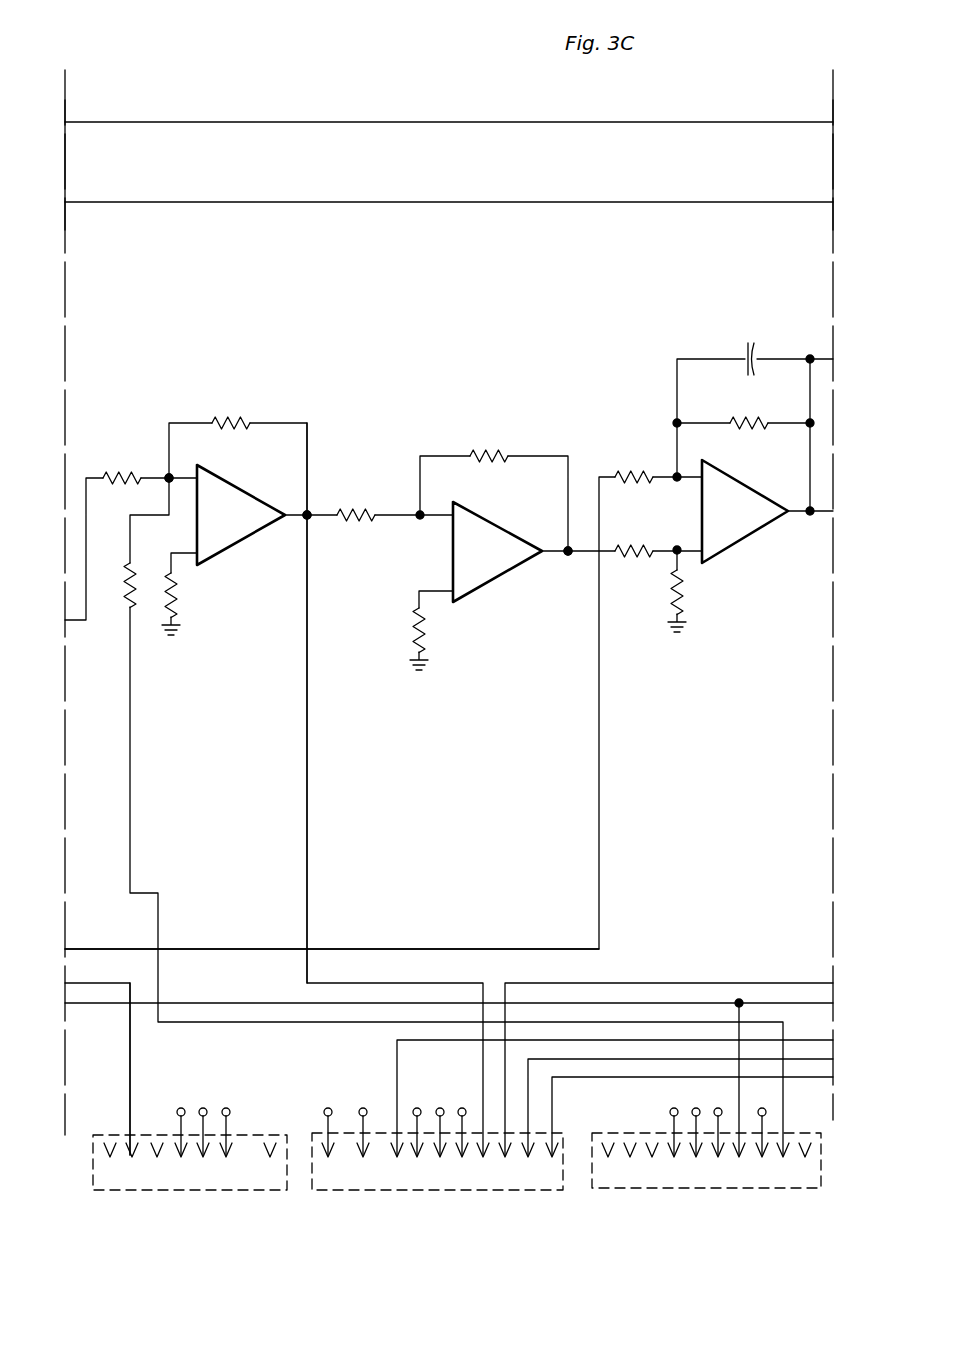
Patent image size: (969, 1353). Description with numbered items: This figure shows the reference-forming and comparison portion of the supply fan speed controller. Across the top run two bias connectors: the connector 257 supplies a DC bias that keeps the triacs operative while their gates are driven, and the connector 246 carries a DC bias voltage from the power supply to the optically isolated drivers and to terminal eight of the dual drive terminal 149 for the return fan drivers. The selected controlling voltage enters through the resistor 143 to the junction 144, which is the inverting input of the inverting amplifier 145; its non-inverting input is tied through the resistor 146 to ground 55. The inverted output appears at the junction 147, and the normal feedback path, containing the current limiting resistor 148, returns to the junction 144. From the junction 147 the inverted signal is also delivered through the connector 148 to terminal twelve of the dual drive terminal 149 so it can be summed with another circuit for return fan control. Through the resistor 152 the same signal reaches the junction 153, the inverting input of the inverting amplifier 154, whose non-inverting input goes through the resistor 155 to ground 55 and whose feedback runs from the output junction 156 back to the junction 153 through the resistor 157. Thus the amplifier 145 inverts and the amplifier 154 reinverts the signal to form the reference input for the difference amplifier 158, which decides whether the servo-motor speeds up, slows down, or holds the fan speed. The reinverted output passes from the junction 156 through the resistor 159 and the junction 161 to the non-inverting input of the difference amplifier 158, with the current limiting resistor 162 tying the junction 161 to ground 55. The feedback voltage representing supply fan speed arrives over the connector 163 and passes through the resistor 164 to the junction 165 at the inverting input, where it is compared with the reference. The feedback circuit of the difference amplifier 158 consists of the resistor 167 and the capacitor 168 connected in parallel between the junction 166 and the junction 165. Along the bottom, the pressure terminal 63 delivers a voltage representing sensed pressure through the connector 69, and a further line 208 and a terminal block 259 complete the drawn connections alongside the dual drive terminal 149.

The connector 257 is at (400, 122).
The connector 246 is at (355, 206).
The resistor 143 is at (143, 467).
The junction 144 is at (172, 474).
The inverting amplifier 145 is at (246, 527).
The resistor 146 is at (174, 594).
The junction 147 is at (310, 514).
The current limiting resistor 148 is at (228, 418).
The resistor 152 is at (374, 519).
The junction 153 is at (420, 516).
The inverting amplifier 154 is at (505, 562).
The resistor 155 is at (416, 630).
The junction 156 is at (568, 554).
The resistor 157 is at (484, 454).
The difference amplifier 158 is at (754, 524).
The resistor 159 is at (640, 548).
The junction 161 is at (690, 530).
The current limiting resistor 162 is at (677, 601).
The connector 163 is at (248, 948).
The resistor 164 is at (638, 474).
The junction 165 is at (677, 477).
The junction 166 is at (810, 359).
The resistor 167 is at (748, 421).
The capacitor 168 is at (744, 352).
The ground 55 is at (178, 630).
The line 208 is at (244, 1008).
The connector 69 is at (130, 1062).
The pressure terminal 63 is at (102, 1138).
The dual drive terminal 149 is at (299, 1134).
The connector 259 is at (596, 1136).